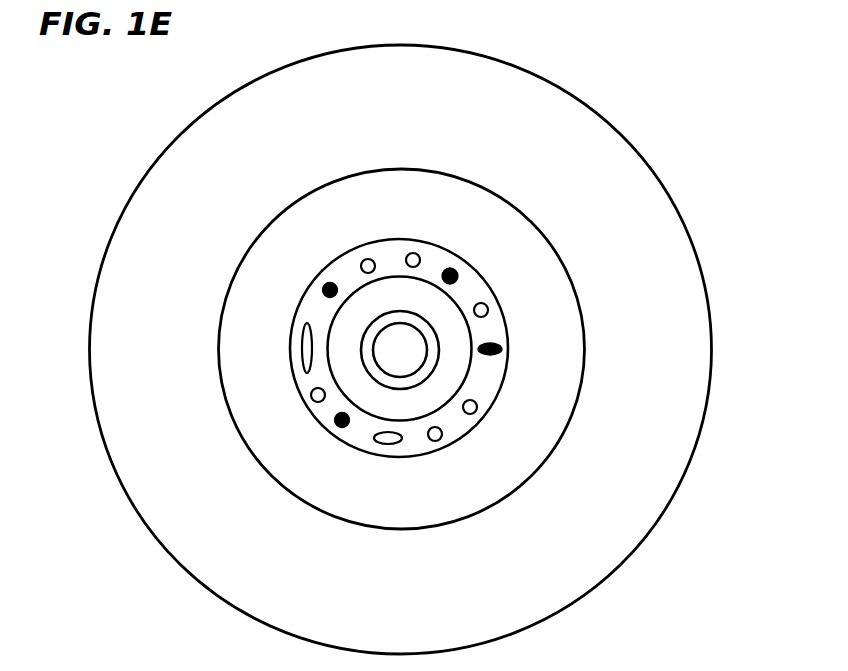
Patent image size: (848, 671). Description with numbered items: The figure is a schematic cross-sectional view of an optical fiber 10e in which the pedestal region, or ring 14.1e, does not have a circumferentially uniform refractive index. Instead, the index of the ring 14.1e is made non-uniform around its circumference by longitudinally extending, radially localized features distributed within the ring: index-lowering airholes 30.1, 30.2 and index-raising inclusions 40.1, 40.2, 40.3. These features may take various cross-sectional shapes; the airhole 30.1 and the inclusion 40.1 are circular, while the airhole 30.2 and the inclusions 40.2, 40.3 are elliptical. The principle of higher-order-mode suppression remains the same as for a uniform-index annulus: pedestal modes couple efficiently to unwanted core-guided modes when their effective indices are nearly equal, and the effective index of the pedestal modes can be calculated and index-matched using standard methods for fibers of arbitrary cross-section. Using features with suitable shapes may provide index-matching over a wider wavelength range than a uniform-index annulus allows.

The fiber 10e is at (638, 98).
The ring 14.1e is at (487, 328).
The index-lowering airhole 30.1 is at (452, 274).
The index-lowering airhole 30.2 is at (501, 351).
The index-raising inclusion 40.1 is at (314, 401).
The index-raising inclusion 40.2 is at (387, 445).
The index-raising inclusion 40.3 is at (302, 352).